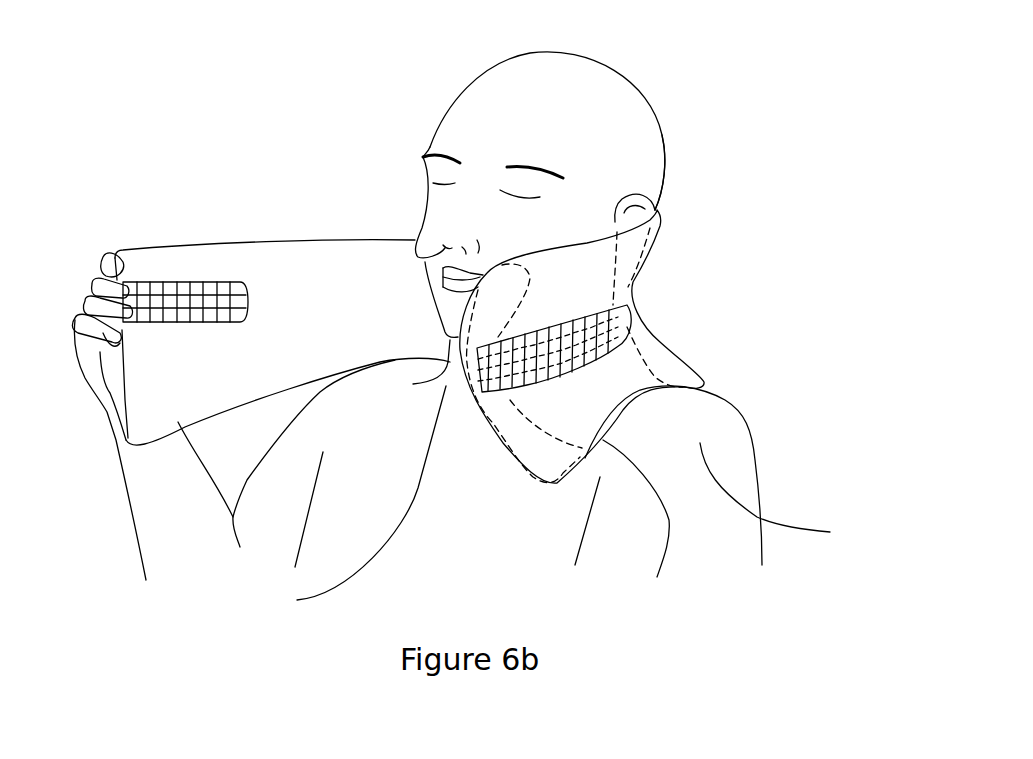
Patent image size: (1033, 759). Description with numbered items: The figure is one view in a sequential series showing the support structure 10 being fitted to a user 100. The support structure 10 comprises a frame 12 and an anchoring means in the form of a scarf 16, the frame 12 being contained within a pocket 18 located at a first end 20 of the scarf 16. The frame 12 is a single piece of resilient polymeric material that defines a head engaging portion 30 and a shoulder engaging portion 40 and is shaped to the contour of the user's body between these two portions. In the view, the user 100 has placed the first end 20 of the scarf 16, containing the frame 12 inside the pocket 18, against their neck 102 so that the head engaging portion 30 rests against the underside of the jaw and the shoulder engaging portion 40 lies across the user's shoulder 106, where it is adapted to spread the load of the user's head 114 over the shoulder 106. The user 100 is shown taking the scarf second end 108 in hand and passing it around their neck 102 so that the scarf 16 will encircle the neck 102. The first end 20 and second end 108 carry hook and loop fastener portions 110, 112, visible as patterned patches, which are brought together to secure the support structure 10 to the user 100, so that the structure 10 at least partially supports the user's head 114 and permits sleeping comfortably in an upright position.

The support structure 10 is at (760, 274).
The frame 12 is at (650, 343).
The scarf 16 is at (247, 303).
The pocket 18 is at (627, 390).
The first end 20 is at (636, 528).
The head engaging portion 30 is at (638, 280).
The shoulder engaging portion 40 is at (687, 377).
The user 100 is at (592, 90).
The neck 102 is at (348, 501).
The shoulder 106 is at (785, 495).
The second end 108 is at (157, 247).
The hook and loop fastener portion 110 is at (496, 393).
The hook and loop fastener portion 112 is at (223, 287).
The head 114 is at (662, 152).